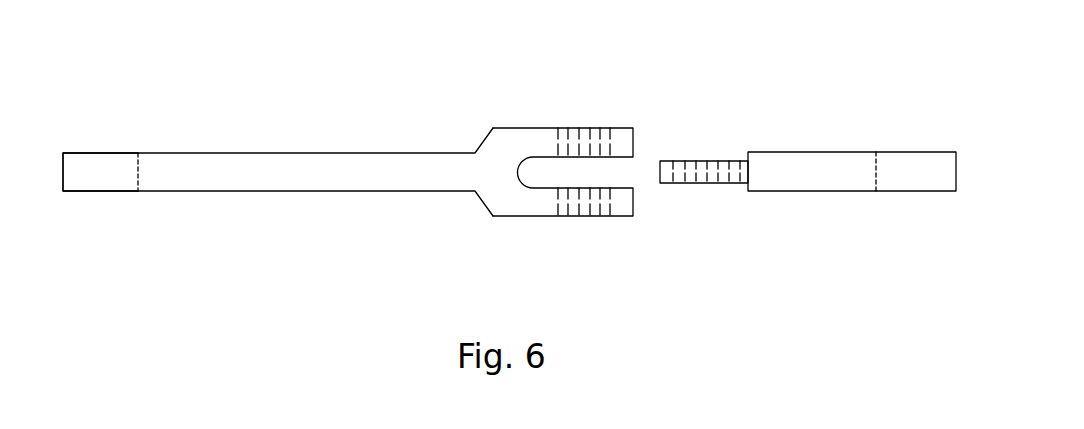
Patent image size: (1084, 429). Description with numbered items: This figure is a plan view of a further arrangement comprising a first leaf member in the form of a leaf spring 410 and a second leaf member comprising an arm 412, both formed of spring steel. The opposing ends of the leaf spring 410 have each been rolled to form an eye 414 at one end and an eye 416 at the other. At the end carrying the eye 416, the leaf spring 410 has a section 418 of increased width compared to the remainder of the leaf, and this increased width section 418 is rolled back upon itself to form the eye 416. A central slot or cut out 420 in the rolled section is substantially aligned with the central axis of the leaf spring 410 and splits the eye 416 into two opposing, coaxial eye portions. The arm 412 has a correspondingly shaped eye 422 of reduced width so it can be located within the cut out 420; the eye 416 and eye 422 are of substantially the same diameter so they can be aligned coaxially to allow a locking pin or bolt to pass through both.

The leaf spring 410 is at (285, 178).
The arm 412 is at (813, 178).
The eye 414 is at (107, 180).
The eye 416 is at (607, 212).
The section having increased width 418 is at (635, 253).
The central slot or cut out 420 is at (625, 170).
The eye 422 is at (718, 163).